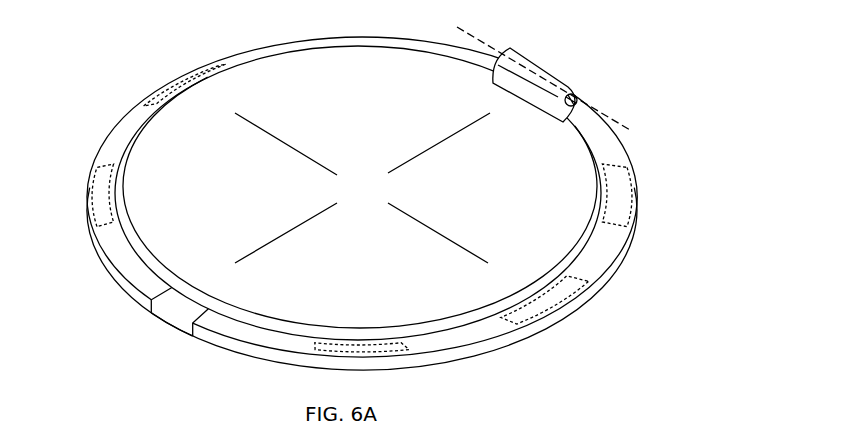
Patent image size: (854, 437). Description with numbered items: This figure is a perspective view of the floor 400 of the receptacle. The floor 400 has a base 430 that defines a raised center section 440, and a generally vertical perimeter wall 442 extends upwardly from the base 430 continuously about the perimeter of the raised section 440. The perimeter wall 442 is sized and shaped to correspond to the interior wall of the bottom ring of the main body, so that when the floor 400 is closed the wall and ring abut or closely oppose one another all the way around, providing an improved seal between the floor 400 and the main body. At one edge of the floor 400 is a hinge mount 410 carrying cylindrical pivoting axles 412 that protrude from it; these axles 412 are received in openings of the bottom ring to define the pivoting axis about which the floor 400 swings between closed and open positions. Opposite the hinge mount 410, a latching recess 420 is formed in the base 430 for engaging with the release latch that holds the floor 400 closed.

The floor 400 is at (395, 189).
The hinge mount 410 is at (538, 70).
The pivoting axle 412 is at (578, 98).
The latching recess 420 is at (152, 324).
The base 430 is at (608, 244).
The raised center section 440 is at (557, 148).
The perimeter wall 442 is at (573, 265).